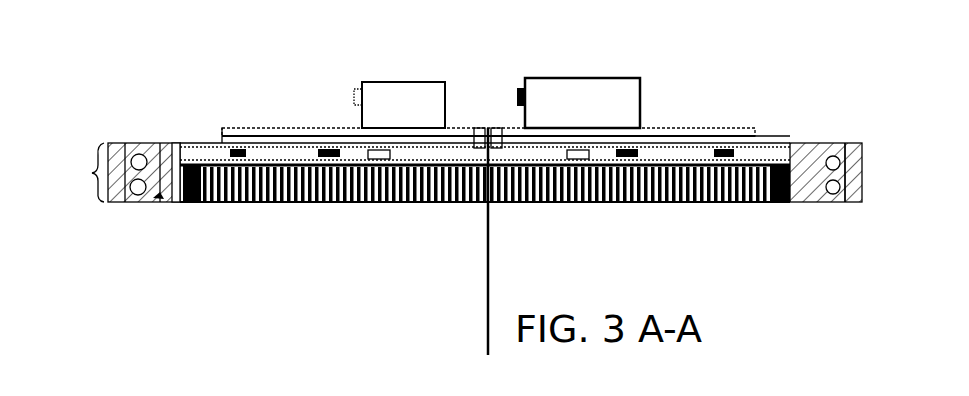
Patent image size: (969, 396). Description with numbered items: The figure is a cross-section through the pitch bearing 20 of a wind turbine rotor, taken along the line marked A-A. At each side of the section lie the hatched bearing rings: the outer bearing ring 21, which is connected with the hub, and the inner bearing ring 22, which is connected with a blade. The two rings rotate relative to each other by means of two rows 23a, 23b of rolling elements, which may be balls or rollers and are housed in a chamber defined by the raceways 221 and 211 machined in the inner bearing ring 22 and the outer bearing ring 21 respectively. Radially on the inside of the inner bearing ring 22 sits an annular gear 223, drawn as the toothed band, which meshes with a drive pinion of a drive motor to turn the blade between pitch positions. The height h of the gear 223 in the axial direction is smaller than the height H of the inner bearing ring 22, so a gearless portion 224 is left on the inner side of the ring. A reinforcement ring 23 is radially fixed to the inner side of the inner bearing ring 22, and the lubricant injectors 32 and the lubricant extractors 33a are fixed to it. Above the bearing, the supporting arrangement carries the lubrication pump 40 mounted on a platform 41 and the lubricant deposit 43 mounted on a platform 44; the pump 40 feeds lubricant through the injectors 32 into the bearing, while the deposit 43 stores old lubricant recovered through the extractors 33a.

The pitch bearing 20 is at (428, 252).
The outer bearing ring 21 is at (113, 202).
The raceway 211 is at (845, 202).
The inner bearing ring 22 is at (816, 143).
The raceway 221 is at (832, 202).
The annular gear 223 is at (790, 202).
The gearless portion 224 is at (158, 143).
The reinforcement ring 23 is at (196, 143).
The first row of rolling elements 23a is at (150, 150).
The second row of rolling elements 23b is at (138, 196).
The lubricant injector 32 is at (726, 147).
The lubricant extractor 33a is at (790, 143).
The lubrication pump 40 is at (570, 108).
The platform 41 is at (648, 130).
The lubricant deposit 43 is at (403, 100).
The platform 44 is at (262, 140).
The height of the inner bearing ring H is at (83, 172).
The height of the gear h is at (157, 202).